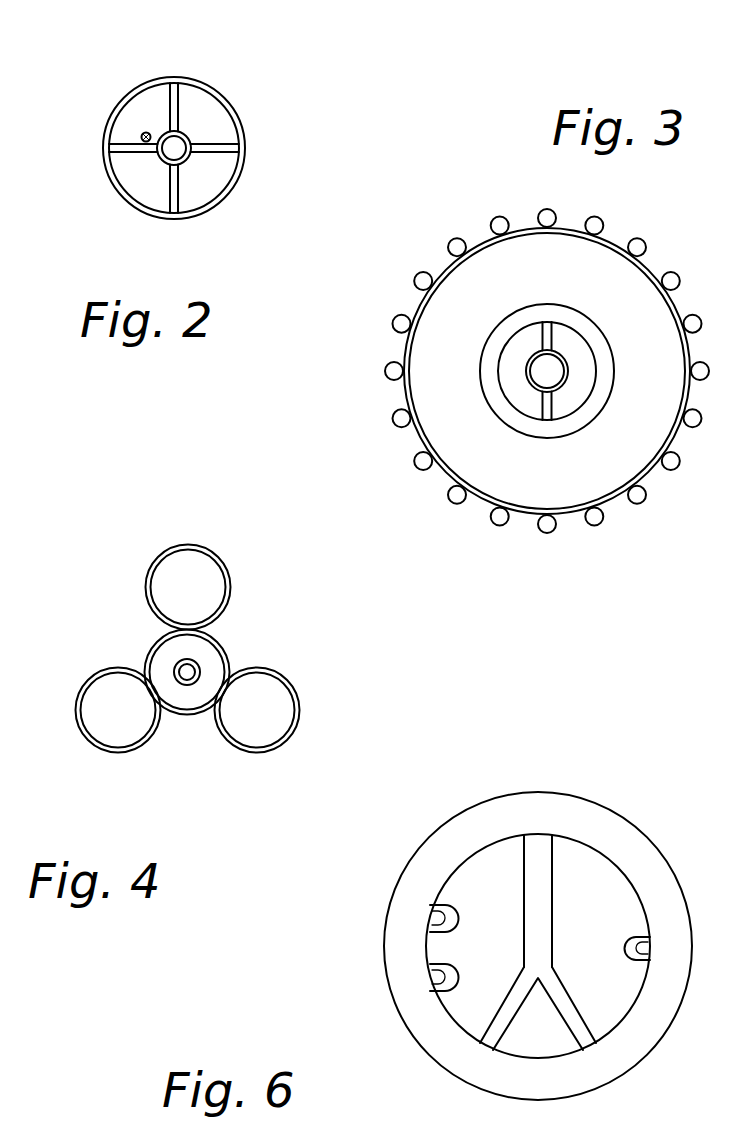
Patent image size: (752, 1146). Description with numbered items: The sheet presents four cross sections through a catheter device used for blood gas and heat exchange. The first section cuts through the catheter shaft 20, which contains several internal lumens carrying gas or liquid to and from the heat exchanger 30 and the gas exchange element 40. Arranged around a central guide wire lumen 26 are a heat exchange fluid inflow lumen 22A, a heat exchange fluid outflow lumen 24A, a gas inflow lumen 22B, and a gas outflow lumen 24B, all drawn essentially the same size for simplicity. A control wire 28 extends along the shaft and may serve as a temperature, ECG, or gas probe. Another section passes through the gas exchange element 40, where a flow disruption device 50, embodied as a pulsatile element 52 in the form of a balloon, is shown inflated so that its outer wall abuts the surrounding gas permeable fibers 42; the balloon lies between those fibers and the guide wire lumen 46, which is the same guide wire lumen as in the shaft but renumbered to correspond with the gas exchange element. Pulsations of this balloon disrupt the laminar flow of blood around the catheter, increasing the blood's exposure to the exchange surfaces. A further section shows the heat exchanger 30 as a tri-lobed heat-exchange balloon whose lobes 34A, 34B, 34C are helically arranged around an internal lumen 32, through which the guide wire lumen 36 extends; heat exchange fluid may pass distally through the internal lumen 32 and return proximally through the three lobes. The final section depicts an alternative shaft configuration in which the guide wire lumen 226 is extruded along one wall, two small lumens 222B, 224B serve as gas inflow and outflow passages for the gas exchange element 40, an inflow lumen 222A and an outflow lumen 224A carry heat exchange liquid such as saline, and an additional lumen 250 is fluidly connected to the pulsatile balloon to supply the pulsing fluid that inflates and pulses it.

In FIG. 2, the catheter shaft 20 is at (222, 95).
In FIG. 2, the heat exchange fluid inflow lumen 22A is at (220, 120).
In FIG. 3, the heat exchange fluid inflow lumen 22A is at (575, 347).
In FIG. 2, the gas inflow lumen 22B is at (145, 103).
In FIG. 2, the heat exchange fluid outflow lumen 24A is at (220, 165).
In FIG. 3, the heat exchange fluid outflow lumen 24A is at (518, 350).
In FIG. 2, the gas outflow lumen 24B is at (137, 185).
In FIG. 2, the guide wire lumen 26 is at (167, 152).
In FIG. 2, the control wire 28 is at (138, 133).
In FIG. 4, the heat exchanger 30 is at (149, 566).
In FIG. 4, the internal lumen 32 is at (227, 650).
In FIG. 4, the lobe 34A is at (215, 552).
In FIG. 4, the lobe 34B is at (297, 687).
In FIG. 4, the lobe 34C is at (130, 752).
In FIG. 4, the guide wire lumen 36 is at (187, 677).
In FIG. 3, the gas exchange element 40 is at (584, 219).
In FIG. 3, the gas permeable fibers 42 is at (460, 240).
In FIG. 3, the guide wire lumen 46 is at (557, 375).
In FIG. 3, the flow disruption device 50 is at (467, 494).
In FIG. 3, the pulsatile element 52 is at (507, 524).
In FIG. 6, the inflow lumen 222A is at (477, 880).
In FIG. 6, the small lumen 222B is at (435, 918).
In FIG. 6, the outflow lumen 224A is at (592, 873).
In FIG. 6, the small lumen 224B is at (433, 977).
In FIG. 6, the guide wire lumen 226 is at (645, 950).
In FIG. 6, the additional lumen 250 is at (518, 1042).